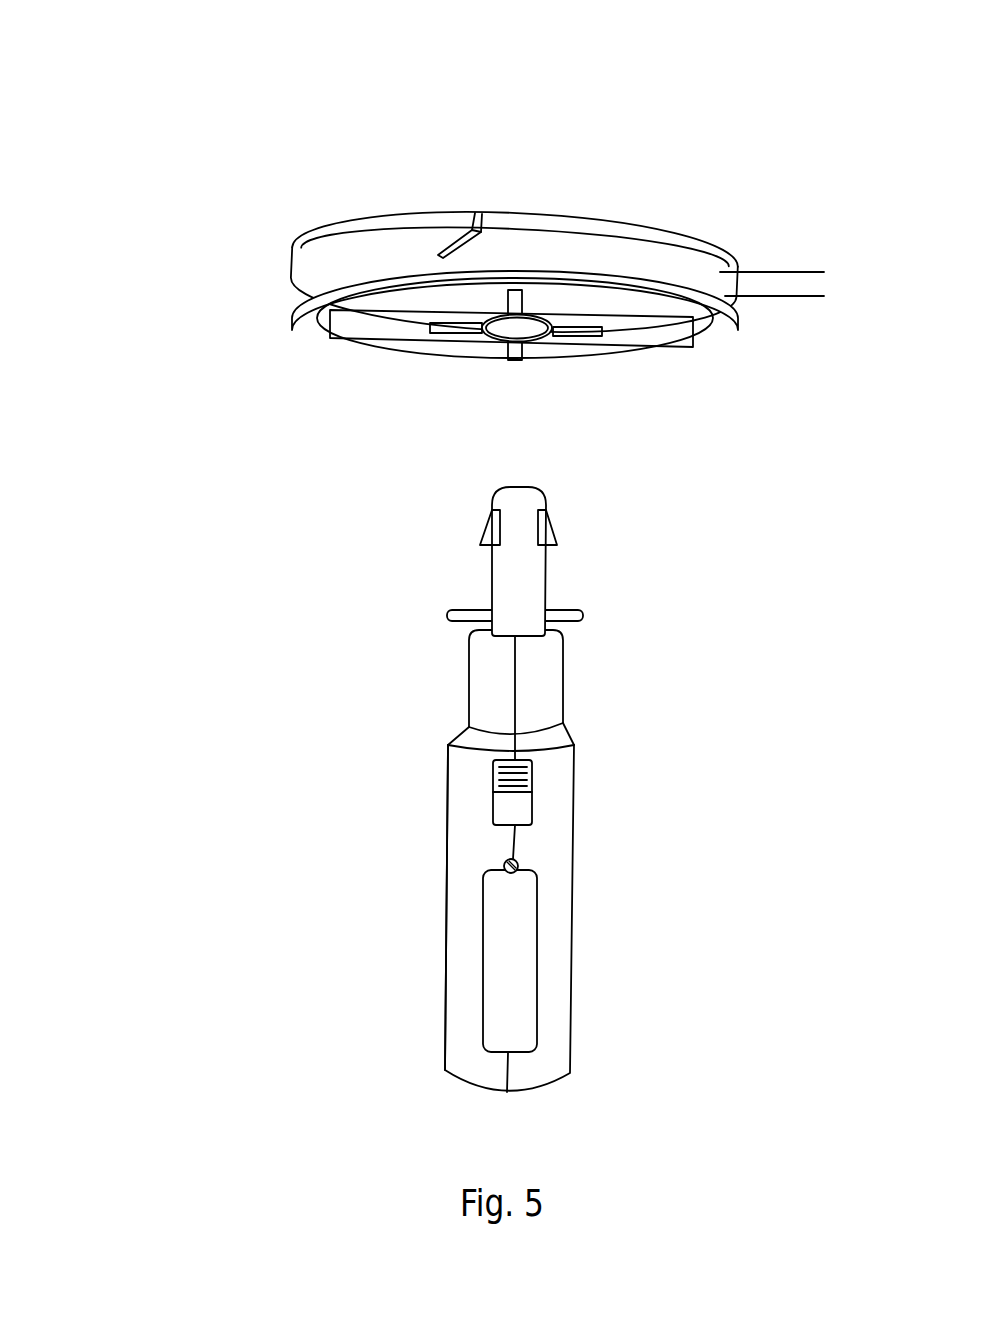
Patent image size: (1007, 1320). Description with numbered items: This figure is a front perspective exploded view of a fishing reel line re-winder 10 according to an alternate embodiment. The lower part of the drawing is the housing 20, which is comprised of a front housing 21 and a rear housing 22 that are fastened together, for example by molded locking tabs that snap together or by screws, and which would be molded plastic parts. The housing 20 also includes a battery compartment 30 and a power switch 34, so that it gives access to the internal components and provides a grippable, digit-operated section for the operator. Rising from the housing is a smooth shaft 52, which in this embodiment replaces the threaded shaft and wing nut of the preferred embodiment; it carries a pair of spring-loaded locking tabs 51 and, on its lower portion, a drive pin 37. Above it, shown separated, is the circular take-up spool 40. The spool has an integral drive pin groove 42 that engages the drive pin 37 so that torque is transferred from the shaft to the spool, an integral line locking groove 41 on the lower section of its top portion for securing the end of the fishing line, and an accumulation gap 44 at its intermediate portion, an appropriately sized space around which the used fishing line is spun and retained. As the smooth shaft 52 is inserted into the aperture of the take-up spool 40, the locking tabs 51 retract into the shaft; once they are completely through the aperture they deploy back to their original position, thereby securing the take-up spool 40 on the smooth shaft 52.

The fishing reel line re-winder 10 is at (872, 132).
The housing 20 is at (540, 797).
The front housing 21 is at (570, 1017).
The rear housing 22 is at (445, 1032).
The battery compartment 30 is at (492, 945).
The power switch 34 is at (493, 767).
The drive pin 37 is at (588, 617).
The take-up spool 40 is at (293, 247).
The line locking groove 41 is at (447, 243).
The drive pin groove 42 is at (437, 332).
The accumulation gap 44 is at (820, 274).
The spring-loaded locking tabs 51 is at (487, 531).
The smooth shaft 52 is at (512, 567).